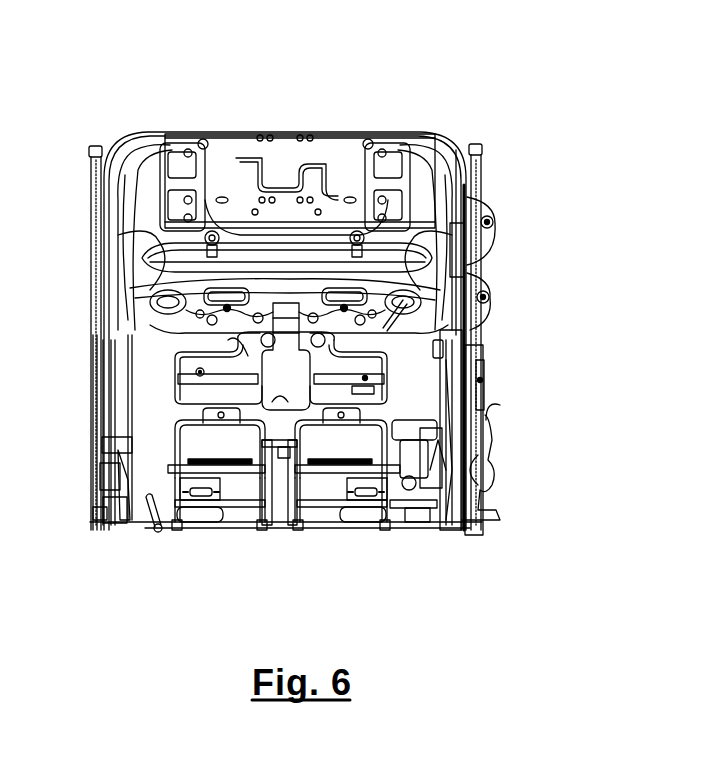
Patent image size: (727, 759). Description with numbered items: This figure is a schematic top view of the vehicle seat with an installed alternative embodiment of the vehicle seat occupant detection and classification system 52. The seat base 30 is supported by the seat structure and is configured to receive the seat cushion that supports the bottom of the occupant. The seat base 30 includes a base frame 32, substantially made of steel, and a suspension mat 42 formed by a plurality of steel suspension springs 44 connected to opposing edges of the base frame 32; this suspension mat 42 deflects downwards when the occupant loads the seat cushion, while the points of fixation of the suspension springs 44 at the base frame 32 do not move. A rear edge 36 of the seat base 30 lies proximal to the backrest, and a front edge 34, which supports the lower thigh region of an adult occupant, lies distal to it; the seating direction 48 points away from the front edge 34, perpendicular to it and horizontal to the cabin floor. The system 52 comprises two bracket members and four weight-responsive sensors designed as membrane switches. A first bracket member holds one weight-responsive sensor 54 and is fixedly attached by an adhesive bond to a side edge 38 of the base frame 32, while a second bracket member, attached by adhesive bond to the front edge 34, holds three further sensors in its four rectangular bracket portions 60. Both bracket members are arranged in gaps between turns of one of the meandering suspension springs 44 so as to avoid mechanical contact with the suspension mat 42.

The seat base 30 is at (492, 160).
The base frame 32 is at (458, 399).
The front edge 34 is at (412, 130).
The rear edge 36 is at (151, 535).
The side edge 38 is at (486, 470).
The suspension mat 42 is at (318, 440).
The suspension springs 44 is at (174, 446).
The seating direction 48 is at (288, 128).
The vehicle seat occupant detection and classification system 52 is at (233, 530).
The weight-responsive sensor 54 is at (409, 494).
The bracket portions 60 is at (286, 300).